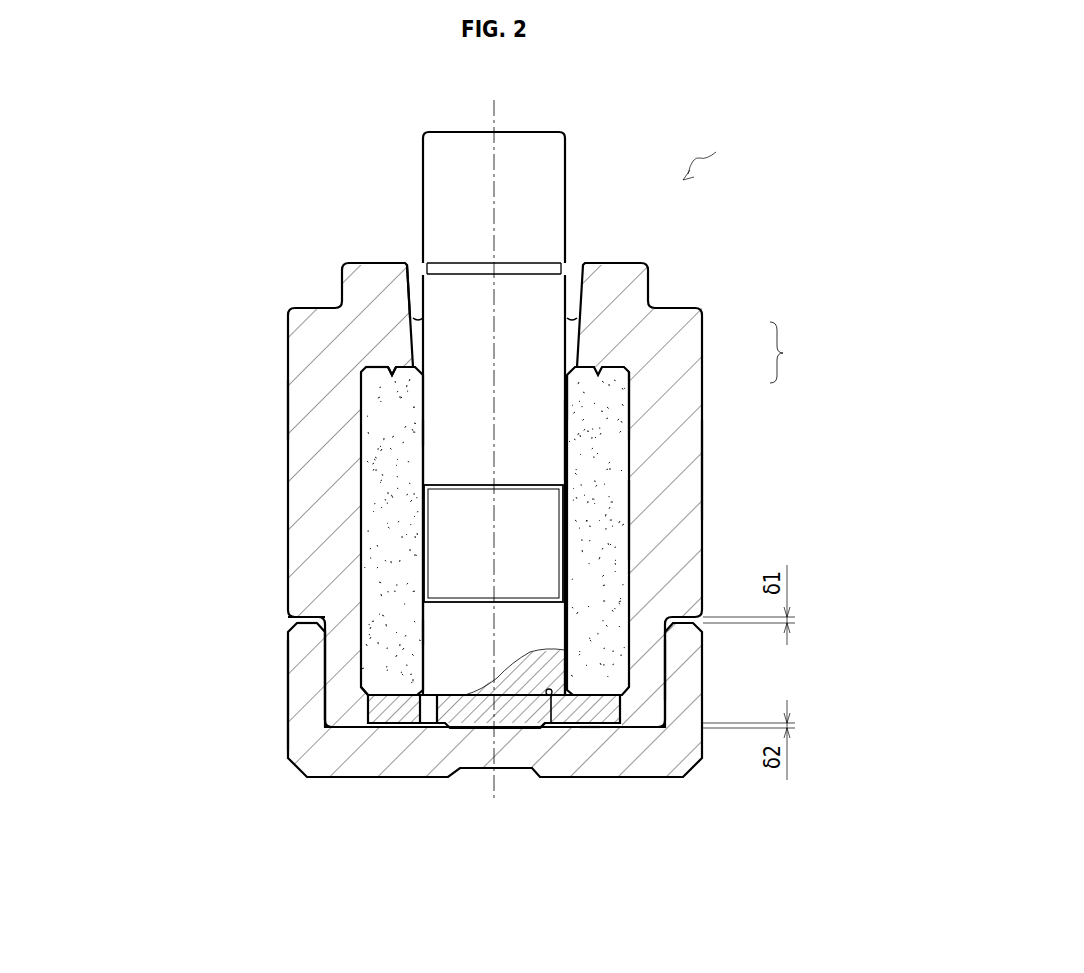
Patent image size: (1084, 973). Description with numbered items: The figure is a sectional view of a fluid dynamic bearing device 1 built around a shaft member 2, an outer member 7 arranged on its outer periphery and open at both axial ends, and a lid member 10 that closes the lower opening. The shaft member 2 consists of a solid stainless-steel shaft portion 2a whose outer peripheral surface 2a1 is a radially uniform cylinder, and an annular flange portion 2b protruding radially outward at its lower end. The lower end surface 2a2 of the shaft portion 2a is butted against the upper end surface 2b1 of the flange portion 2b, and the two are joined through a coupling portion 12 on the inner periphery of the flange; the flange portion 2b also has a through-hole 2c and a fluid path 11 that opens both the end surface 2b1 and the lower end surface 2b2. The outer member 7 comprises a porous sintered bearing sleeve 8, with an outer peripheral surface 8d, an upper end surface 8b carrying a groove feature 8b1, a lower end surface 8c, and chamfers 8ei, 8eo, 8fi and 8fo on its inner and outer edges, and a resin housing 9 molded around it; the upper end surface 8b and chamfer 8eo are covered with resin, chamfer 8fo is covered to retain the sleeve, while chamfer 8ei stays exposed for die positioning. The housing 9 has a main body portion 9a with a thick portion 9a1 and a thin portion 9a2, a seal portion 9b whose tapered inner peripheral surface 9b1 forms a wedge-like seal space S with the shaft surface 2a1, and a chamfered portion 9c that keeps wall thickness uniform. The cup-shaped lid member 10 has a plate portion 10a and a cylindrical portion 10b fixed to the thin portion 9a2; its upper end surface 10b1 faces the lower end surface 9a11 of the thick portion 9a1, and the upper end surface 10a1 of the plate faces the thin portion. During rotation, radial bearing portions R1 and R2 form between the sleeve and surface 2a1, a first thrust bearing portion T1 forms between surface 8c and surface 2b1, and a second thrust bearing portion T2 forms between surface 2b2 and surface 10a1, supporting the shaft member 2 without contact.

The fluid dynamic bearing device 1 is at (709, 157).
The shaft member 2 is at (538, 129).
The shaft portion 2a is at (553, 178).
The outer peripheral surface of the shaft portion 2a1 is at (567, 438).
The lower end surface of the shaft portion 2a2 is at (482, 735).
The flange portion 2b is at (612, 712).
The upper end surface of the flange portion 2b1 is at (425, 690).
The lower end surface of the flange portion 2b2 is at (395, 730).
The through-hole 2c is at (540, 732).
The outer member 7 is at (782, 352).
The bearing sleeve 8 is at (630, 403).
The upper end surface of the bearing sleeve 8b is at (375, 345).
The upper end surface groove of the bearing sleeve 8b1 is at (394, 355).
The lower end surface of the bearing sleeve 8c is at (370, 735).
The outer peripheral surface of the bearing sleeve 8d is at (630, 520).
The inner peripheral chamfer at the upper end of the bearing sleeve 8ei is at (570, 362).
The outer peripheral chamfer at the upper end of the bearing sleeve 8eo is at (650, 345).
The inner peripheral chamfer at the lower end of the bearing sleeve 8fi is at (560, 700).
The outer peripheral chamfer at the lower end of the bearing sleeve 8fo is at (600, 692).
The housing 9 is at (705, 343).
The main body portion 9a is at (703, 473).
The thick portion 9a1 is at (292, 410).
The lower end surface of the thick portion 9a11 is at (297, 635).
The thin portion 9a2 is at (322, 660).
The seal portion 9b is at (600, 282).
The inner peripheral surface of the seal portion 9b1 is at (423, 300).
The chamfered portion 9c is at (311, 306).
The lid member 10 is at (290, 762).
The plate portion 10a is at (430, 745).
The upper end surface of the plate portion 10a1 is at (645, 735).
The cylindrical portion 10b is at (300, 695).
The upper end surface of the cylindrical portion 10b1 is at (300, 606).
The fluid path 11 is at (430, 712).
The coupling portion 12 is at (540, 695).
The seal space S is at (573, 300).
The first radial bearing portion R1 is at (423, 432).
The second radial bearing portion R2 is at (421, 633).
The first thrust bearing portion T1 is at (660, 660).
The second thrust bearing portion T2 is at (590, 735).